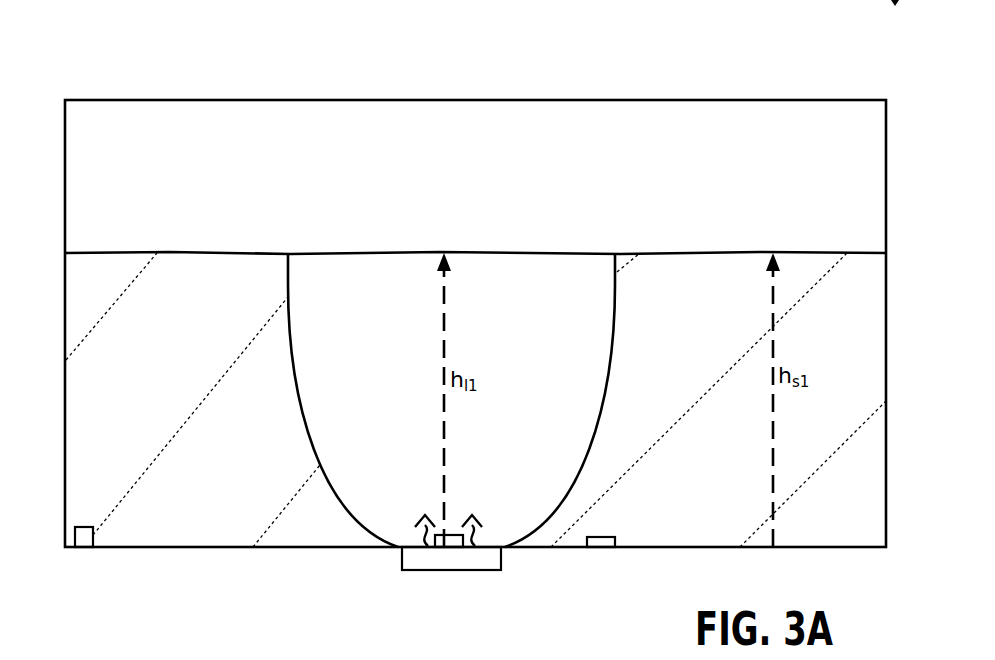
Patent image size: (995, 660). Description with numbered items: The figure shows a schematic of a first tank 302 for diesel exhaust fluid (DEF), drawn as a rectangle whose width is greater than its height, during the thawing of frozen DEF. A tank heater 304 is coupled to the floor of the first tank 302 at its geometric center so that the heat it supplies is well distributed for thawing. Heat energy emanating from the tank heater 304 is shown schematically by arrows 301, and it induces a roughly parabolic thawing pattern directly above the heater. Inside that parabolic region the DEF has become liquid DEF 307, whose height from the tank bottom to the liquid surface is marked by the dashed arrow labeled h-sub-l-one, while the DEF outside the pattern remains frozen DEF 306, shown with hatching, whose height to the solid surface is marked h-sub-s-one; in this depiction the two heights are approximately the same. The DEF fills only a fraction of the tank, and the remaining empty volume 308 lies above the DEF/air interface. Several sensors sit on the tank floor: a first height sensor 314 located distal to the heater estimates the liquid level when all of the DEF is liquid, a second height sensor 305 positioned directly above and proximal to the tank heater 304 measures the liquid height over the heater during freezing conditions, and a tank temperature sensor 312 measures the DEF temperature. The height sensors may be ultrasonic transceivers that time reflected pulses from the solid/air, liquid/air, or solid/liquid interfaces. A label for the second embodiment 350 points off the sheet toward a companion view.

The arrows 301 is at (477, 533).
The first tank 302 is at (215, 100).
The tank heater 304 is at (448, 558).
The second height sensor 305 is at (465, 548).
The frozen DEF 306 is at (180, 372).
The liquid DEF 307 is at (393, 355).
The empty volume 308 is at (442, 201).
The tank temperature sensor 312 is at (602, 542).
The first height sensor 314 is at (85, 538).
The second embodiment 350 is at (888, 659).